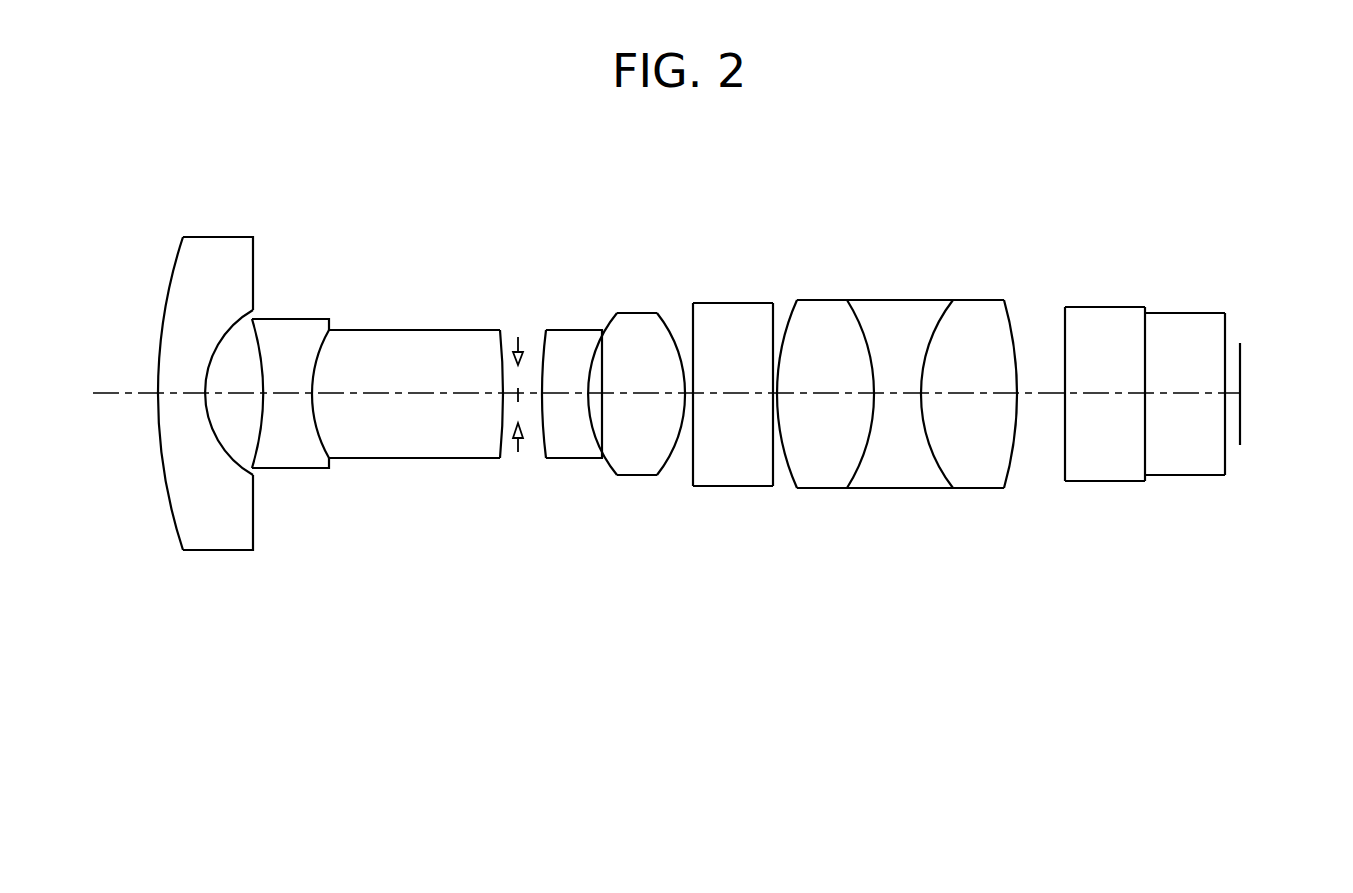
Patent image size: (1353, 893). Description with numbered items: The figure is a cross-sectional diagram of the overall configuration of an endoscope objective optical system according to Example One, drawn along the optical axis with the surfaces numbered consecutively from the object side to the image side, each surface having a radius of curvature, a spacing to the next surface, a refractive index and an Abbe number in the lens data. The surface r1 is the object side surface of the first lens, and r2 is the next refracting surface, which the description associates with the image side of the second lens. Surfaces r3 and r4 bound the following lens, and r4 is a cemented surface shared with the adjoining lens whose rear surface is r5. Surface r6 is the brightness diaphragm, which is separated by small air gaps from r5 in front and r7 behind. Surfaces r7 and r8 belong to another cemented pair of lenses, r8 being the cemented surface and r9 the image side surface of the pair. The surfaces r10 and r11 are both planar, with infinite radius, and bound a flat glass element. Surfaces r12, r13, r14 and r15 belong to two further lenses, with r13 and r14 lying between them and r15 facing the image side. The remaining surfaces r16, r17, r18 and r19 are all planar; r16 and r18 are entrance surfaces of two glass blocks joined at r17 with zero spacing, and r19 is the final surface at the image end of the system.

The object side surface of first lens r1 is at (170, 286).
The image side surface radius of curvature r2 is at (236, 452).
The third surface radius of curvature r3 is at (259, 349).
The fourth surface radius of curvature r4 is at (322, 350).
The fifth surface radius of curvature r5 is at (507, 340).
The brightness diaphragm r6 is at (525, 338).
The seventh surface radius of curvature r7 is at (543, 437).
The eighth surface radius of curvature r8 is at (602, 348).
The ninth surface radius of curvature r9 is at (668, 320).
The tenth surface radius of curvature r10 is at (690, 462).
The eleventh surface radius of curvature r11 is at (774, 468).
The twelfth surface radius of curvature r12 is at (792, 315).
The thirteenth surface radius of curvature r13 is at (865, 323).
The fourteenth surface radius of curvature r14 is at (935, 325).
The fifteenth surface radius of curvature r15 is at (1008, 315).
The sixteenth surface radius of curvature r16 is at (1063, 453).
The seventeenth surface radius of curvature r17 is at (1143, 455).
The eighteenth surface radius of curvature r18 is at (1143, 332).
The nineteenth surface radius of curvature r19 is at (1227, 460).